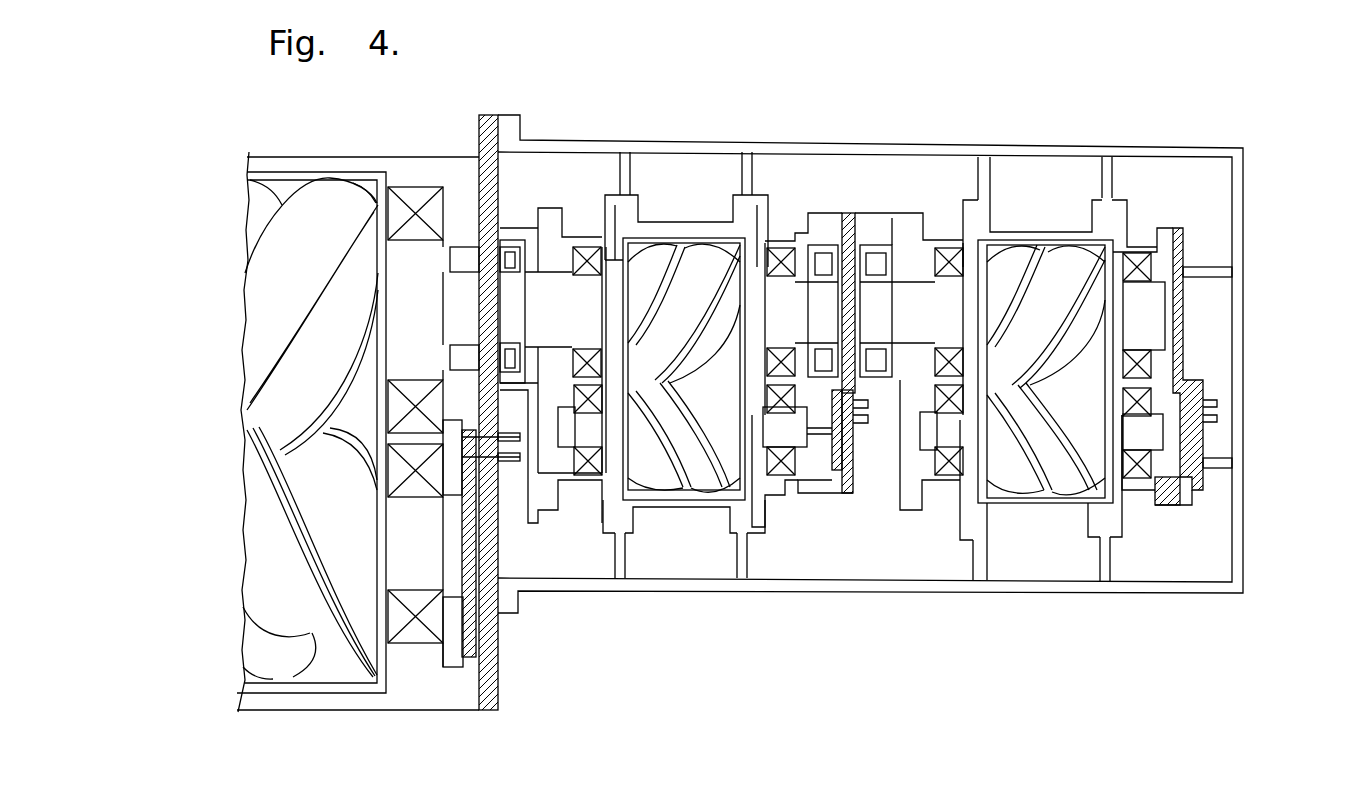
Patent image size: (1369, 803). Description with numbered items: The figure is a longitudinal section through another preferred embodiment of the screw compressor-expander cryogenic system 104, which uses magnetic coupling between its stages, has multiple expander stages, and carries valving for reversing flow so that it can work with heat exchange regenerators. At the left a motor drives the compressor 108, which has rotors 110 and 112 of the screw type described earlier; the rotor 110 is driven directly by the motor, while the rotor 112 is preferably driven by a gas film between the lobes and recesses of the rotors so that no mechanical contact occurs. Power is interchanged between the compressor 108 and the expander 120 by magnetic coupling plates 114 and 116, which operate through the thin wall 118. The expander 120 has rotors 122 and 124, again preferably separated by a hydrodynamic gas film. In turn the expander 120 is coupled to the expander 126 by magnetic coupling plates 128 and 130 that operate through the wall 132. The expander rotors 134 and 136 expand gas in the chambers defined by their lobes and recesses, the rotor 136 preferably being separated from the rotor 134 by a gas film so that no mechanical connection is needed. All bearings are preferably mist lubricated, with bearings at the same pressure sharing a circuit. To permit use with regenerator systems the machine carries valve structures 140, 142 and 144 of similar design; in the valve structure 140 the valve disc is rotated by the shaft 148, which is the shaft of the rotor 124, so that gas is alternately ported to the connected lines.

The screw compressor-expander cryogenic system 104 is at (1262, 87).
The compressor 108 is at (248, 152).
The rotor 110 is at (330, 190).
The rotor 112 is at (288, 665).
The magnetic coupling plate 114 is at (458, 255).
The magnetic coupling plate 116 is at (508, 252).
The thin wall 118 is at (490, 120).
The expander 120 is at (690, 195).
The rotor 122 is at (722, 250).
The rotor 124 is at (662, 483).
The expander 126 is at (1020, 220).
The magnetic coupling plate 128 is at (826, 262).
The magnetic coupling plate 130 is at (880, 258).
The wall 132 is at (850, 258).
The expander rotor 134 is at (1055, 262).
The expander rotor 136 is at (1035, 478).
The valve structure 140 is at (833, 465).
The valve structure 142 is at (463, 645).
The valve structure 144 is at (1173, 468).
The shaft 148 is at (780, 442).